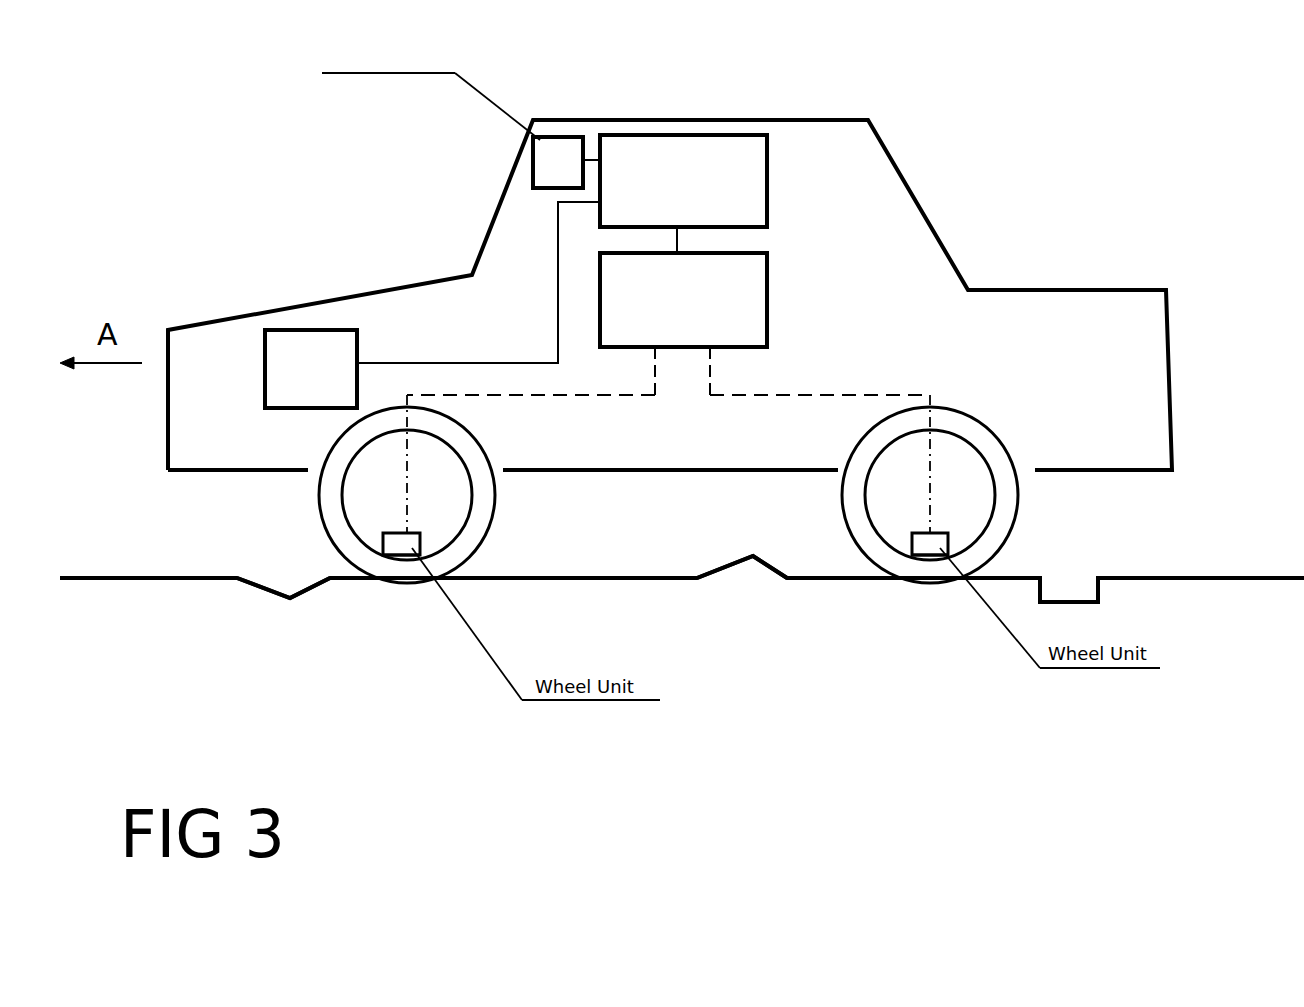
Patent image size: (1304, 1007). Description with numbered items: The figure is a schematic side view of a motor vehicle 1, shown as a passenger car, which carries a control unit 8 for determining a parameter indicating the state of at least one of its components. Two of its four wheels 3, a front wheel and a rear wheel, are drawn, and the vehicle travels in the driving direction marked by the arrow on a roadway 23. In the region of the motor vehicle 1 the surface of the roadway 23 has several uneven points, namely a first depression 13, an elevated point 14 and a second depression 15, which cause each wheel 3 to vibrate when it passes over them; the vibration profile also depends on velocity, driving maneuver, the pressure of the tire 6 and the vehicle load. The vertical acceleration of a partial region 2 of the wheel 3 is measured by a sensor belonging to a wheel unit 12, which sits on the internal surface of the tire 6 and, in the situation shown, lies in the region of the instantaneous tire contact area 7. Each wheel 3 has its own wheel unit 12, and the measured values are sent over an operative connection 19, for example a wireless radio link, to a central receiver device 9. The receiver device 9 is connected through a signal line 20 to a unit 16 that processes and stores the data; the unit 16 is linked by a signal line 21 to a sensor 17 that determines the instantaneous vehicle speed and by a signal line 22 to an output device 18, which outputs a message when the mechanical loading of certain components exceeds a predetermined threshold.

The motor vehicle 1 is at (1075, 345).
The partial region of the wheel 2 is at (432, 533).
The wheel 3 is at (507, 498).
The tire 6 is at (455, 545).
The instantaneous tire contact area 7 is at (410, 590).
The control unit 8 is at (822, 206).
The receiver device 9 is at (742, 315).
The wheel unit 12 is at (385, 578).
The first depression 13 is at (268, 576).
The elevated point 14 is at (703, 557).
The second depression 15 is at (1088, 567).
The unit 16 is at (745, 175).
The sensor 17 is at (310, 374).
The output device 18 is at (555, 150).
The operative connection 19 is at (612, 398).
The signal line 20 is at (680, 242).
The signal line 21 is at (558, 287).
The signal line 22 is at (592, 158).
The roadway 23 is at (132, 578).